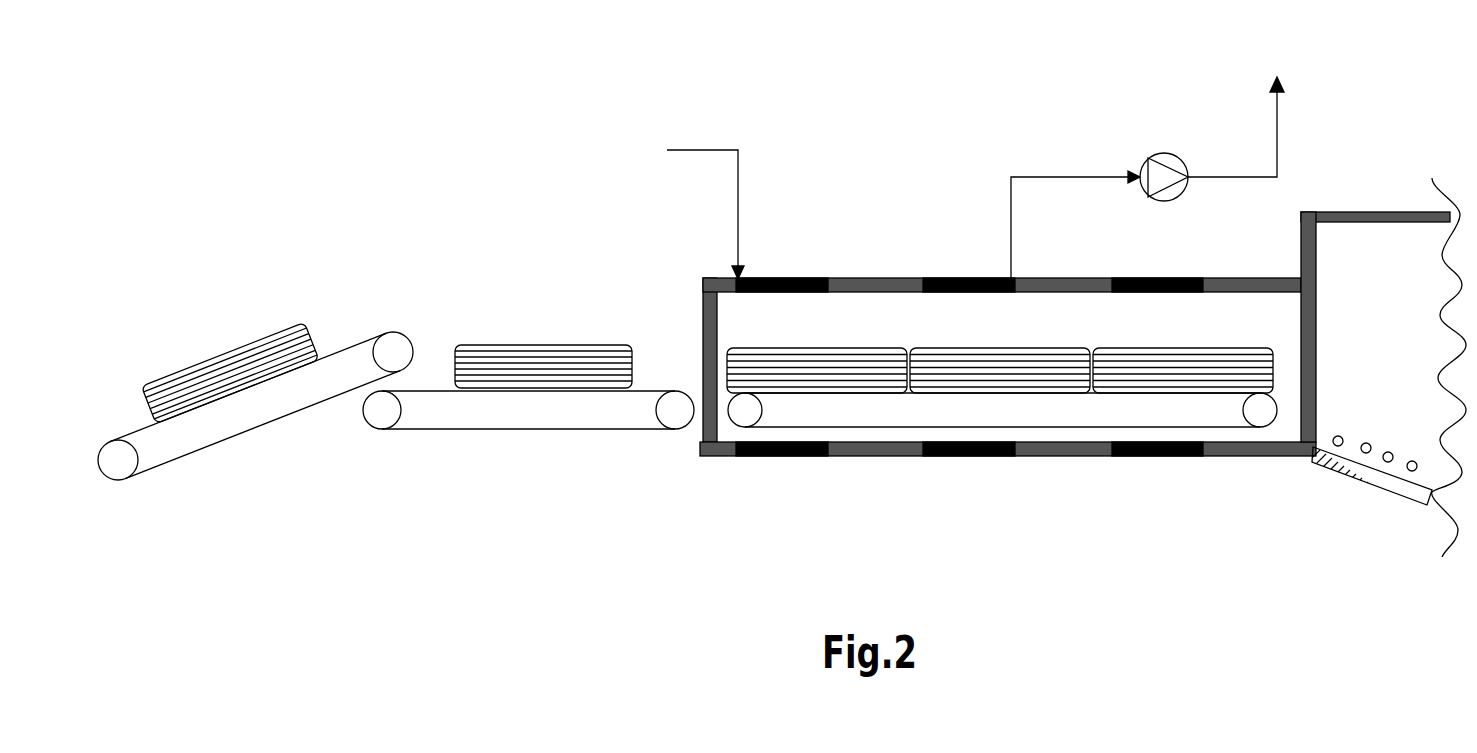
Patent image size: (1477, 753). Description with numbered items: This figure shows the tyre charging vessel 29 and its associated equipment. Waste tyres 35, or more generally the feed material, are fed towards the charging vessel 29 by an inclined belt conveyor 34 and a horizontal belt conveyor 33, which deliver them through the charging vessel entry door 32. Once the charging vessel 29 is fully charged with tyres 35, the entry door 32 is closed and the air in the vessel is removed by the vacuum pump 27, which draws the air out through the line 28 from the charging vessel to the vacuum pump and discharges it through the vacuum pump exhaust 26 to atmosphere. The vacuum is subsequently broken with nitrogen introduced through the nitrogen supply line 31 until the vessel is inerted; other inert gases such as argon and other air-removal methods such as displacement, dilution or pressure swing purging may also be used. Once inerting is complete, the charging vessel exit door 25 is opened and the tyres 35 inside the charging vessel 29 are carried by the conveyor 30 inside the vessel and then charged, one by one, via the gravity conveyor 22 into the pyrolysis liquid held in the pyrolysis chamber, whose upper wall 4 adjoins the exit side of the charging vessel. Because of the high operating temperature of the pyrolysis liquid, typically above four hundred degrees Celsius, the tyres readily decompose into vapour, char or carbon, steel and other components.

The pyrolysis chamber upper wall 4 is at (1350, 212).
The gravity conveyor 22 is at (1366, 445).
The charging vessel exit door 25 is at (1320, 328).
The vacuum pump exhaust to atmosphere 26 is at (1287, 110).
The vacuum pump 27 is at (1163, 152).
The line from charging vessel to vacuum pump 28 is at (1011, 172).
The charging vessel 29 is at (880, 277).
The conveyor inside tyre charging vessel 30 is at (1020, 405).
The nitrogen supply line 31 is at (702, 148).
The charging vessel entry door 32 is at (698, 320).
The belt conveyor 33 is at (458, 428).
The belt conveyor 34 is at (235, 437).
The tyre or feed material 35 is at (263, 330).